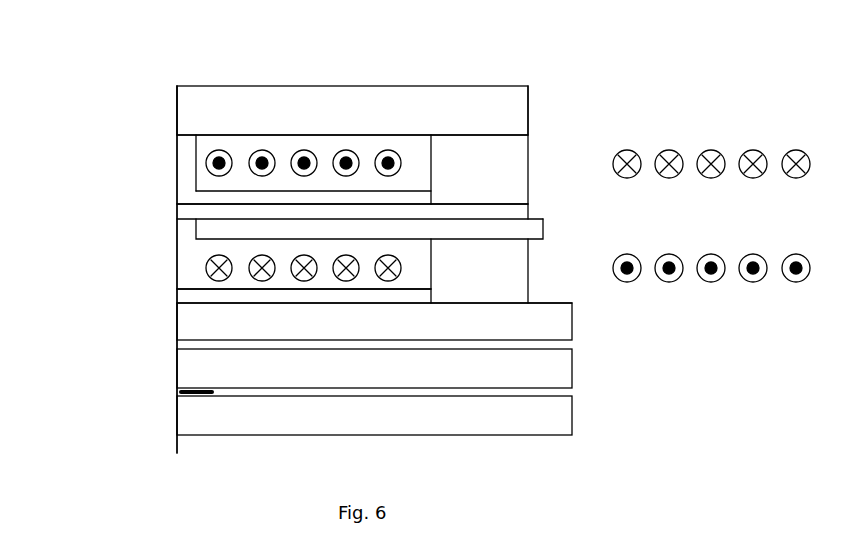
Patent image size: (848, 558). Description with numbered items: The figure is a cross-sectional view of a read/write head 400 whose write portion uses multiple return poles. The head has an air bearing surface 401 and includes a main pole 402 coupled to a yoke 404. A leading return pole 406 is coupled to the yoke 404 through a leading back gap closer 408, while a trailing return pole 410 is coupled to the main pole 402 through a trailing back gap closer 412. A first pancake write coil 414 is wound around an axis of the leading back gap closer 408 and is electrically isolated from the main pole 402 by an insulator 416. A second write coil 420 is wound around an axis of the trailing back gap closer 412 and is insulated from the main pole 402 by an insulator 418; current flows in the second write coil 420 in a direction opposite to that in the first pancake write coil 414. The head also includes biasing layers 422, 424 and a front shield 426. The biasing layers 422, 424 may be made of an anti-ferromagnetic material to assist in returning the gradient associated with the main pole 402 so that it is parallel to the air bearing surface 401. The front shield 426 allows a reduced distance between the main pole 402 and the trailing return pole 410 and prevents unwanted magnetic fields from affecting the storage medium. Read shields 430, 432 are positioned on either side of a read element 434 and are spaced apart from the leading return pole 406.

The read/write head 400 is at (627, 101).
The air bearing surface 401 is at (177, 275).
The main pole 402 is at (190, 211).
The yoke 404 is at (528, 232).
The leading return pole 406 is at (188, 319).
The leading back gap closer 408 is at (515, 275).
The trailing return pole 410 is at (430, 107).
The trailing back gap closer 412 is at (515, 163).
The first pancake write coil 414 is at (705, 280).
The insulator 416 is at (193, 258).
The insulator 418 is at (207, 140).
The second write coil 420 is at (708, 150).
The biasing layer 422 is at (193, 297).
The biasing layer 424 is at (192, 197).
The front shield 426 is at (177, 162).
The read shield 430 is at (270, 413).
The read shield 432 is at (188, 372).
The read element 434 is at (183, 395).